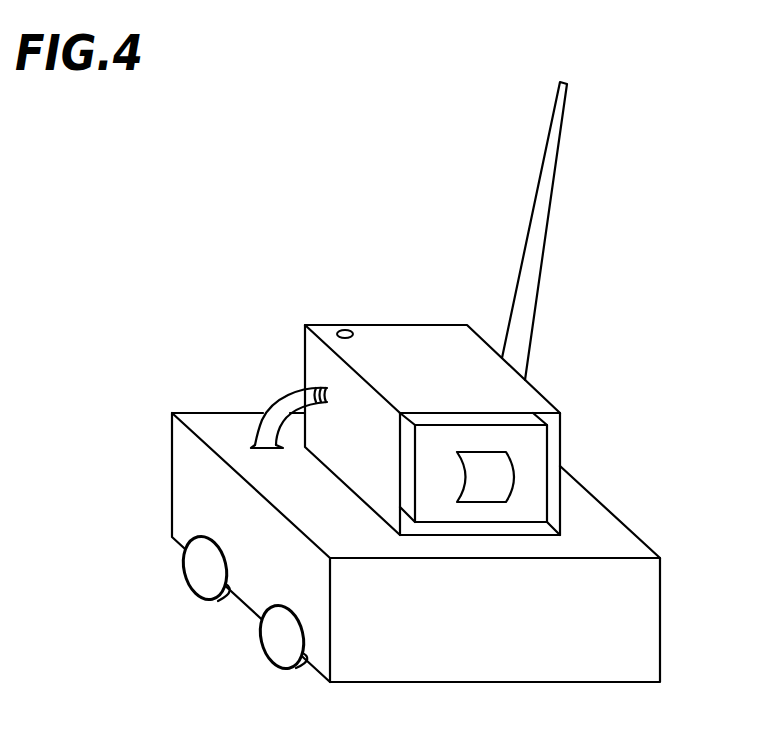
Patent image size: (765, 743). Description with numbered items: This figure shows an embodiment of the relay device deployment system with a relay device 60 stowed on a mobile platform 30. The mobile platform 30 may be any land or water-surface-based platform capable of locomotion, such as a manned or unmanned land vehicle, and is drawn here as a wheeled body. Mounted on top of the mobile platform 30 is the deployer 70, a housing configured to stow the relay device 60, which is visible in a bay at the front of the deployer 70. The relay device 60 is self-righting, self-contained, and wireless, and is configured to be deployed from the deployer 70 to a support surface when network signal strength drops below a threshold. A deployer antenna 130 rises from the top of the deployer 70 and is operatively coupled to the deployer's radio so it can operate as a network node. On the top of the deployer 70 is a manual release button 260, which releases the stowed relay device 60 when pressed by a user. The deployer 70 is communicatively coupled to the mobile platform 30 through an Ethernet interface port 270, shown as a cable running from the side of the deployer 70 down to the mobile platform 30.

The mobile platform 30 is at (186, 467).
The relay device 60 is at (530, 458).
The deployer 70 is at (515, 395).
The deployer antenna 130 is at (545, 220).
The manual release button 260 is at (345, 330).
The Ethernet interface port 270 is at (310, 384).